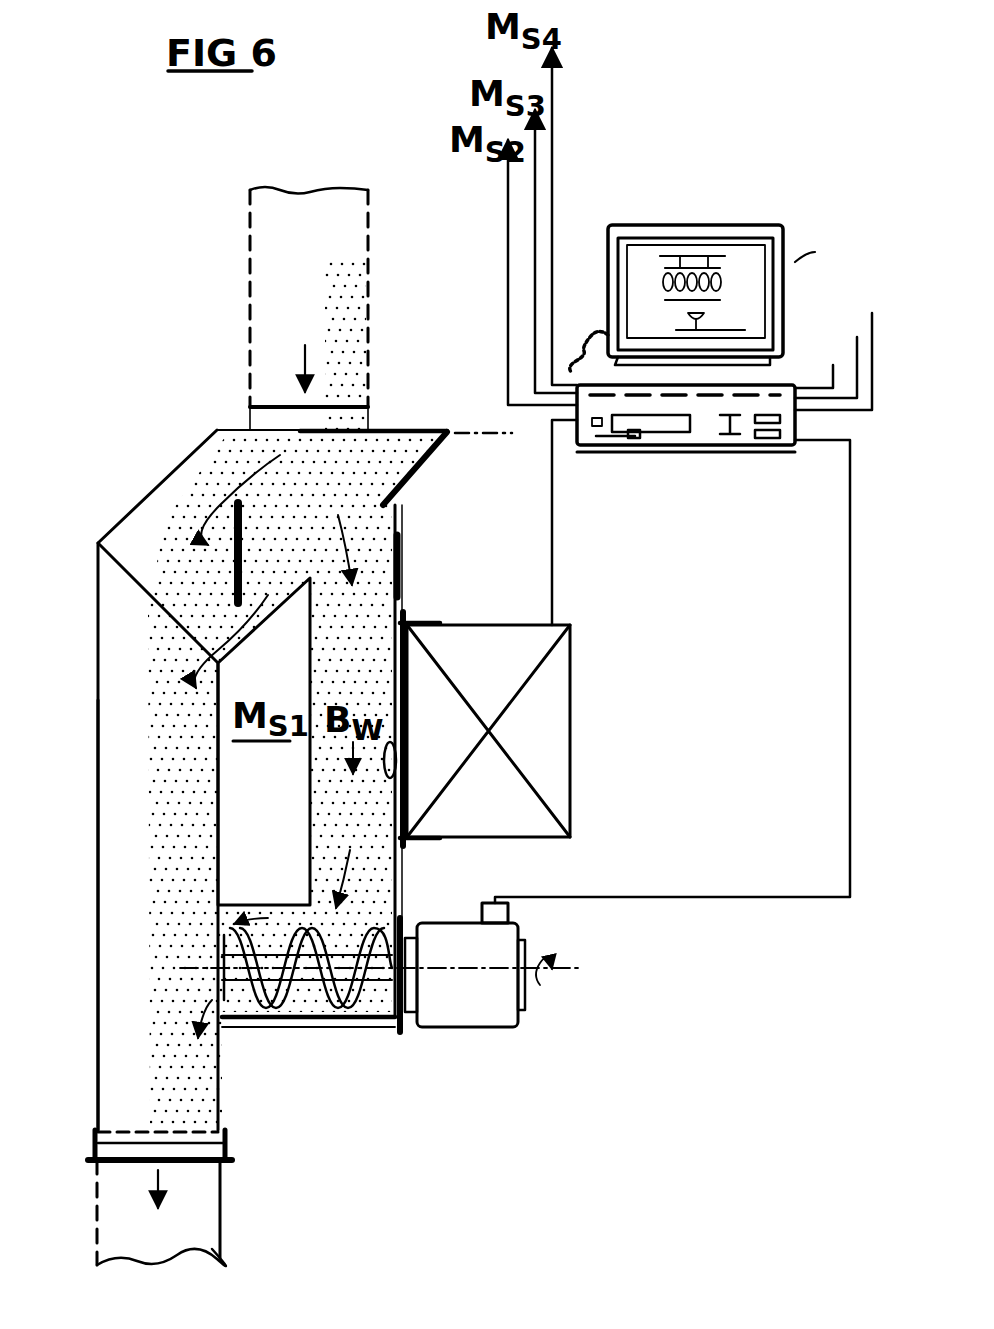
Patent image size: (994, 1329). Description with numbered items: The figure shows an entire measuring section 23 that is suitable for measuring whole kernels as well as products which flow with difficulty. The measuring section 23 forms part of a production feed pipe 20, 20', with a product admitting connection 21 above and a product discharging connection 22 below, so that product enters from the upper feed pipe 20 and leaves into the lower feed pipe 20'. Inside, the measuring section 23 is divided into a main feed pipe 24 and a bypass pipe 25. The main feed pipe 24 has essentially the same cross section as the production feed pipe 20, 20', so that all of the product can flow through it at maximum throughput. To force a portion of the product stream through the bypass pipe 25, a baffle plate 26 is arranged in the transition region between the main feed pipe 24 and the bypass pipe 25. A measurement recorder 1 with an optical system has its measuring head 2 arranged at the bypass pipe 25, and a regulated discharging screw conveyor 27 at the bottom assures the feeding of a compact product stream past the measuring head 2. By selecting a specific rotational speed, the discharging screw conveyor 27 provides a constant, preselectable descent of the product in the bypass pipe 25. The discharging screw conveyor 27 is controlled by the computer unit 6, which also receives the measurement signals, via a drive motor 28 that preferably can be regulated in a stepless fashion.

The measurement recorder 1 is at (557, 752).
The measuring head 2 is at (398, 757).
The computer unit 6 is at (745, 222).
The production feed pipe 20 is at (277, 297).
The production feed pipe 20' is at (214, 1213).
The product admitting connection 21 is at (262, 423).
The product discharging connection 22 is at (205, 1092).
The measuring section 23 is at (66, 688).
The main feed pipe 24 is at (118, 826).
The bypass pipe 25 is at (365, 546).
The baffle plate 26 is at (232, 574).
The discharging screw conveyor 27 is at (347, 1020).
The drive motor 28 is at (470, 1017).